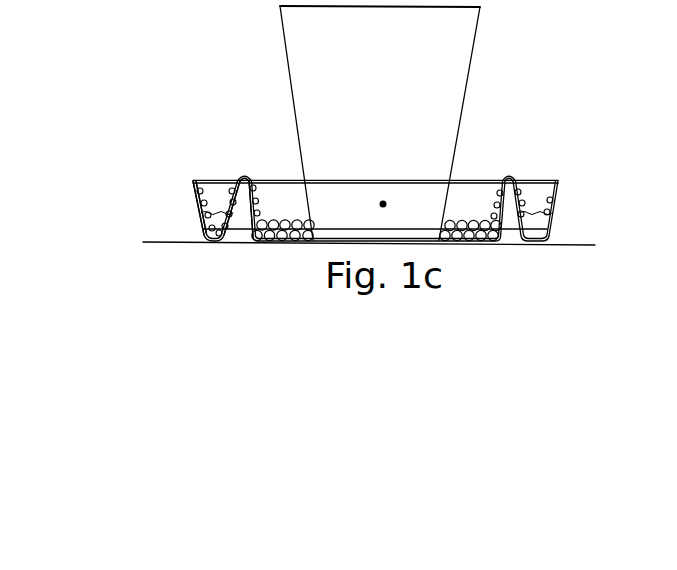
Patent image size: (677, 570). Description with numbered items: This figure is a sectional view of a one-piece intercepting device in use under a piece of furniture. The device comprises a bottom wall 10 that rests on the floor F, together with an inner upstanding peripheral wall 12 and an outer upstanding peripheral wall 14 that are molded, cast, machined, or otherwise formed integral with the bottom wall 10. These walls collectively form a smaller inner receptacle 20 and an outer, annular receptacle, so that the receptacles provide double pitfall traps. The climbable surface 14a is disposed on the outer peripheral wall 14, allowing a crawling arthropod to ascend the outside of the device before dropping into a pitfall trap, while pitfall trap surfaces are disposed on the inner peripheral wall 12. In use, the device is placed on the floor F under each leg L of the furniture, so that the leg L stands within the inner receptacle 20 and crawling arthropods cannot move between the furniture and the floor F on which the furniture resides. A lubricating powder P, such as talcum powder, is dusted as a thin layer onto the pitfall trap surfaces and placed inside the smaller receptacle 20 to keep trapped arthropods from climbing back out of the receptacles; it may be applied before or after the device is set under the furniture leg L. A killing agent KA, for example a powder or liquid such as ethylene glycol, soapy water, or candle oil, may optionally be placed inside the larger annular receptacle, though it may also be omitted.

The leg of furniture L is at (472, 70).
The floor F is at (570, 243).
The outer upstanding peripheral wall 14 is at (190, 178).
The climbable surface 14a is at (198, 213).
The inner upstanding peripheral wall 12 is at (243, 178).
The bottom wall 10 is at (217, 242).
The lubricating powder P is at (285, 220).
The inner receptacle 20 is at (383, 204).
The killing agent KA is at (536, 213).